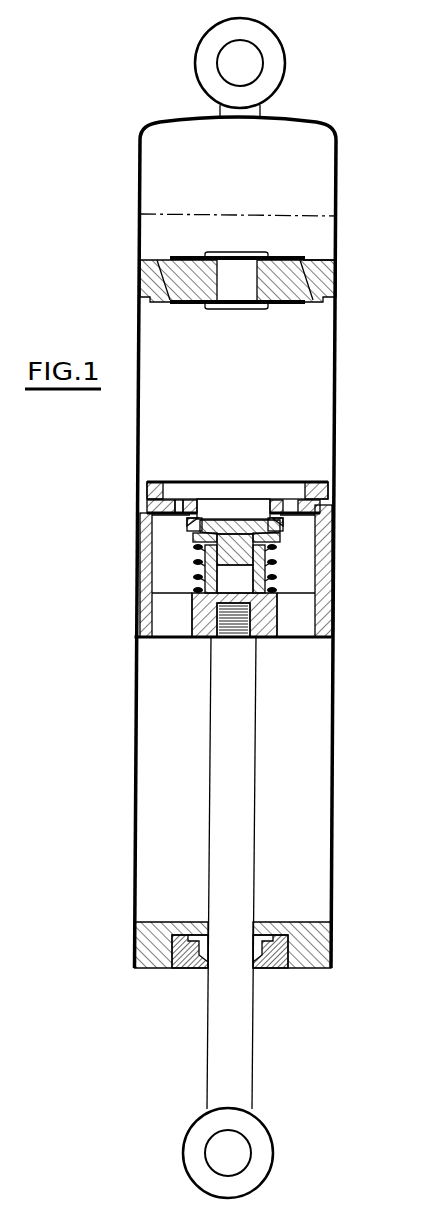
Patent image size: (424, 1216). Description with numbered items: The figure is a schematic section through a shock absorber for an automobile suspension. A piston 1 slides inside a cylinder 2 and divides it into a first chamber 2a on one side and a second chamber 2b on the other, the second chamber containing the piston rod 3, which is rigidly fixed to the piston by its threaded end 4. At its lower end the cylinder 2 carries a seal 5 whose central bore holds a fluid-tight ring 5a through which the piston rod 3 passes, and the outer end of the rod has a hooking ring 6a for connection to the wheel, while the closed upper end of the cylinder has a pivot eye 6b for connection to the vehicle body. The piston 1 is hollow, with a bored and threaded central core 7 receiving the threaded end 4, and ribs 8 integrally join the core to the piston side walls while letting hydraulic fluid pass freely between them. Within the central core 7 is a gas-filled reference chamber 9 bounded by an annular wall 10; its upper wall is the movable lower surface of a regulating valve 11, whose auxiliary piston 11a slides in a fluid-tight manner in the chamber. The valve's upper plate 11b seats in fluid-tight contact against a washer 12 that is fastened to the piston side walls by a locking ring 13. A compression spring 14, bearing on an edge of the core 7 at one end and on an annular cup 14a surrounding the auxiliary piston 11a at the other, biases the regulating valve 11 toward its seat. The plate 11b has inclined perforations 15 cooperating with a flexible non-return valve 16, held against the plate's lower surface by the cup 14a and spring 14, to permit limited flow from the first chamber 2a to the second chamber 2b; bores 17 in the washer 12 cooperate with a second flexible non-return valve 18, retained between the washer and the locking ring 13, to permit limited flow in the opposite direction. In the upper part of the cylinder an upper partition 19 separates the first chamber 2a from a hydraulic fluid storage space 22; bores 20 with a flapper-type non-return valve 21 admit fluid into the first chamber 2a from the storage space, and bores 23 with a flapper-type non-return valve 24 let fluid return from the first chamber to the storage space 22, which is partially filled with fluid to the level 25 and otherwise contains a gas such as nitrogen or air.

The piston 1 is at (322, 600).
The cylinder 2 is at (340, 702).
The first chamber 2a is at (283, 403).
The second chamber 2b is at (290, 798).
The piston rod 3 is at (225, 772).
The threaded end 4 is at (250, 625).
The seal 5 is at (258, 972).
The fluid-tight ring 5a is at (270, 966).
The hooking ring 6a is at (258, 1150).
The pivot eye 6b is at (272, 62).
The central core 7 is at (200, 636).
The ribs 8 is at (175, 625).
The reference chamber 9 is at (193, 598).
The annular wall 10 is at (235, 580).
The regulating valve 11 is at (304, 516).
The auxiliary piston 11a is at (285, 556).
The upper plate 11b is at (285, 521).
The washer 12 is at (150, 506).
The locking ring 13 is at (147, 486).
The compression spring 14 is at (279, 585).
The annular cup 14a is at (280, 540).
The perforations 15 is at (190, 525).
The flexible non-return valve 16 is at (200, 539).
The bores 17 is at (180, 505).
The flexible non-return valve 18 is at (190, 503).
The upper partition 19 is at (276, 305).
The bores 20 is at (235, 283).
The flexible flapper-type non-return valve 21 is at (186, 305).
The hydraulic fluid storage space 22 is at (185, 186).
The bores 23 is at (338, 266).
The flexible flapper-type non-return valve 24 is at (286, 257).
The fluid level 25 is at (256, 214).